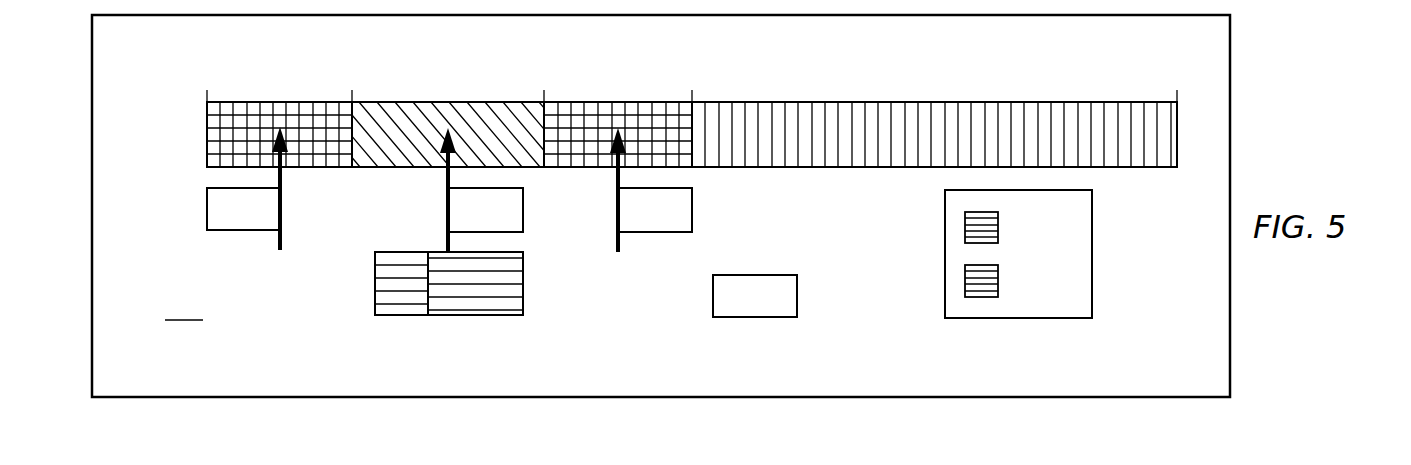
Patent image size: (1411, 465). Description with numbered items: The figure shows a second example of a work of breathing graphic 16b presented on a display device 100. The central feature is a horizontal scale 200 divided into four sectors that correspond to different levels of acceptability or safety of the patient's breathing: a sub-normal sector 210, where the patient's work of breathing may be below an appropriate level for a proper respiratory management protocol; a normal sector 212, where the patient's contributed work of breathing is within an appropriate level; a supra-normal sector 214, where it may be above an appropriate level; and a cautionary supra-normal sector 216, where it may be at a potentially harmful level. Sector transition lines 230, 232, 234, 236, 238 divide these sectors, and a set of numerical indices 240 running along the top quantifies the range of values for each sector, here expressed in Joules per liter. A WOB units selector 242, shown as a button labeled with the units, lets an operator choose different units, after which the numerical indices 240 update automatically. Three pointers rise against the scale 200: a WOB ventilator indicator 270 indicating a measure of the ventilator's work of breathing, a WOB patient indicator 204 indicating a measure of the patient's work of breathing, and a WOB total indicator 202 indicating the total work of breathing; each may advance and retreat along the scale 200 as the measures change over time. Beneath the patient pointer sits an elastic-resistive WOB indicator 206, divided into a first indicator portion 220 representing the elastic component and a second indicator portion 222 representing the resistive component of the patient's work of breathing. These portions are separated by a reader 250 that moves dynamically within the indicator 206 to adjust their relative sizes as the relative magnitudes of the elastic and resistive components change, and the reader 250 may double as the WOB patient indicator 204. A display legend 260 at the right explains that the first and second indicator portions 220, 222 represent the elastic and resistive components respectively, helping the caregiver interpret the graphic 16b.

The display device 100 is at (1236, 134).
The WOB graphic 16b is at (184, 307).
The scale 200 is at (692, 98).
The sub-normal sector 210 is at (262, 100).
The normal sector 212 is at (425, 101).
The supra-normal sector 214 is at (634, 100).
The cautionary supra-normal sector 216 is at (988, 101).
The sector transition line 230 is at (206, 150).
The sector transition line 232 is at (346, 150).
The sector transition line 234 is at (546, 150).
The sector transition line 236 is at (694, 151).
The sector transition line 238 is at (1179, 153).
The numerical indices 240 is at (193, 76).
The WOB ventilator indicator 270 is at (284, 214).
The WOB patient indicator 204 is at (445, 212).
The WOB total indicator 202 is at (616, 215).
The elastic-resistive WOB indicator 206 is at (400, 317).
The first indicator portion 220 is at (401, 316).
The second indicator portion 222 is at (493, 313).
The reader 250 is at (437, 314).
The WOB units selector 242 is at (799, 296).
The display legend 260 is at (1113, 274).